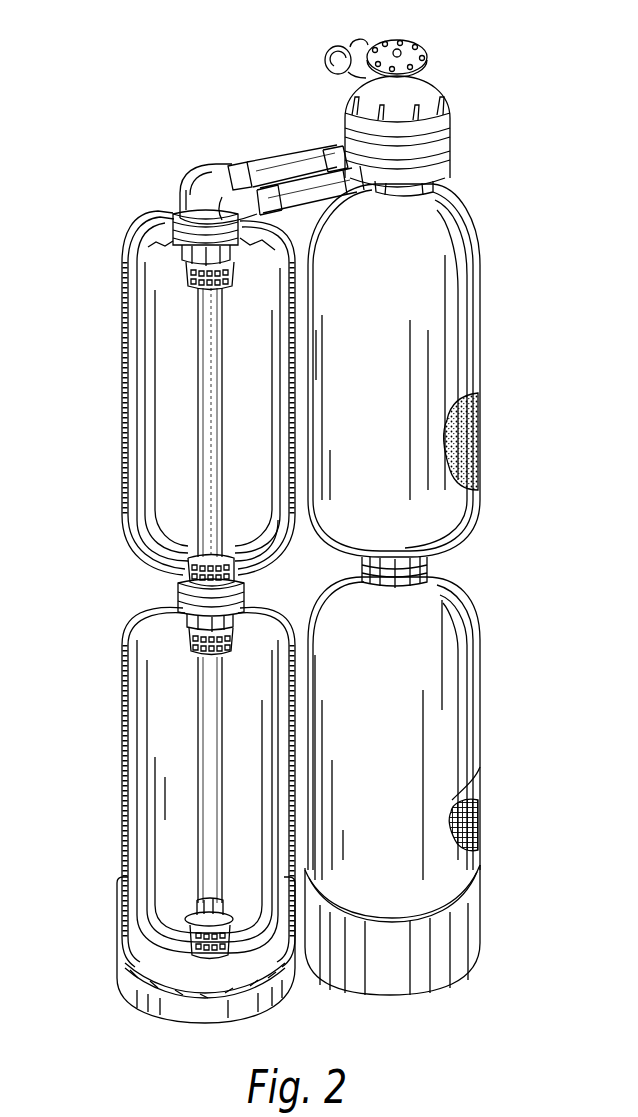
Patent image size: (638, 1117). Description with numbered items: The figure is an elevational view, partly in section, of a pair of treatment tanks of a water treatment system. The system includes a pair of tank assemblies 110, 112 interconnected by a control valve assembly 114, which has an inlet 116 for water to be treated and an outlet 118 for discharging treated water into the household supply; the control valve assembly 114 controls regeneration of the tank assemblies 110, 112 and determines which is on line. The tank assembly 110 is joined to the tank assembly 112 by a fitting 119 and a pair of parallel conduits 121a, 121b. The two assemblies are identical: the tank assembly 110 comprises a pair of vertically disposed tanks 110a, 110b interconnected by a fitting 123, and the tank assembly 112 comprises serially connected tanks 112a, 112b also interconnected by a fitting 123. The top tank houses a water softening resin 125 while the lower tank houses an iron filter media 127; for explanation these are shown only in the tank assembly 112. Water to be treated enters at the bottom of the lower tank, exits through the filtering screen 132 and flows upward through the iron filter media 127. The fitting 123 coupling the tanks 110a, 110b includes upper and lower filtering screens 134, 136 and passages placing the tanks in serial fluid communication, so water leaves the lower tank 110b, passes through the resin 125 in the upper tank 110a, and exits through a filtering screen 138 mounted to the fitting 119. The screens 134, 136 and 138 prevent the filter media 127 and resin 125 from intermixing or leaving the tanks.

The tank assembly 110 is at (100, 380).
The upper tank 110a is at (122, 456).
The lower tank 110b is at (120, 753).
The tank assembly 112 is at (534, 396).
The upper tank 112a is at (480, 330).
The lower tank 112b is at (478, 745).
The control valve assembly 114 is at (466, 78).
The inlet 116 is at (337, 47).
The outlet 118 is at (387, 36).
The fitting 119 is at (192, 167).
The conduit 121a is at (272, 160).
The conduit 121b is at (333, 192).
The fitting 123 is at (242, 594).
The water softening resin 125 is at (470, 442).
The iron filter media 127 is at (476, 813).
The filtering screen 132 is at (233, 912).
The filtering screen 134 is at (227, 648).
The filtering screen 136 is at (233, 557).
The filtering screen 138 is at (223, 287).